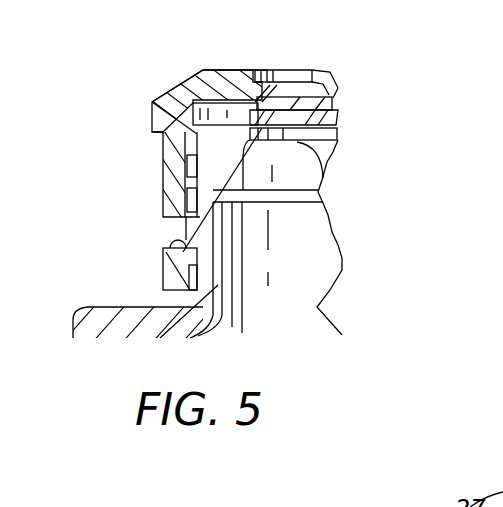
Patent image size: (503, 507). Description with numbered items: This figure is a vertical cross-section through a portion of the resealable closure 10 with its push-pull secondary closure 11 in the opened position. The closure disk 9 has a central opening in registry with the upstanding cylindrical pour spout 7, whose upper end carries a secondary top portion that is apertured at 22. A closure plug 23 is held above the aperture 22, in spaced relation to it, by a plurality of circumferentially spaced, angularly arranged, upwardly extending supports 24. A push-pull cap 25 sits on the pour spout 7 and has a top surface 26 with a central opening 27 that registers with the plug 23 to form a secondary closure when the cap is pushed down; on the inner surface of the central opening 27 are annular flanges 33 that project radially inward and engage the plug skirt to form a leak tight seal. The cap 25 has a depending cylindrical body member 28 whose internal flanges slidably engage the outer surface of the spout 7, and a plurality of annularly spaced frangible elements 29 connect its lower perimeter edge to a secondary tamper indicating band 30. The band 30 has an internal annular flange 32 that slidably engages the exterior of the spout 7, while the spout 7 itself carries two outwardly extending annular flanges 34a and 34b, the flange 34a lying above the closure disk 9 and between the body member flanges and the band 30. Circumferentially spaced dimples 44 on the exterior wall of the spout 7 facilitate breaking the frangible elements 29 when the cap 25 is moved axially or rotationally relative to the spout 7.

The upstanding cylindrical pour spout 7 is at (318, 210).
The closure disk 9 is at (118, 306).
The resealable closure 10 is at (380, 307).
The push-pull secondary closure 11 is at (349, 145).
The aperture 22 is at (323, 174).
The closure plug 23 is at (330, 102).
The supports 24 is at (334, 117).
The push-pull cap 25 is at (152, 101).
The top surface 26 is at (244, 70).
The central opening 27 is at (307, 70).
The depending cylindrical body member 28 is at (180, 147).
The frangible elements 29 is at (178, 244).
The secondary tamper indicating band 30 is at (165, 278).
The internal annular flange 32 is at (200, 263).
The annular flanges 33 is at (282, 70).
The outwardly extending annular flange 34a is at (188, 200).
The outwardly extending annular flange 34b is at (200, 137).
The dimples 44 is at (190, 222).